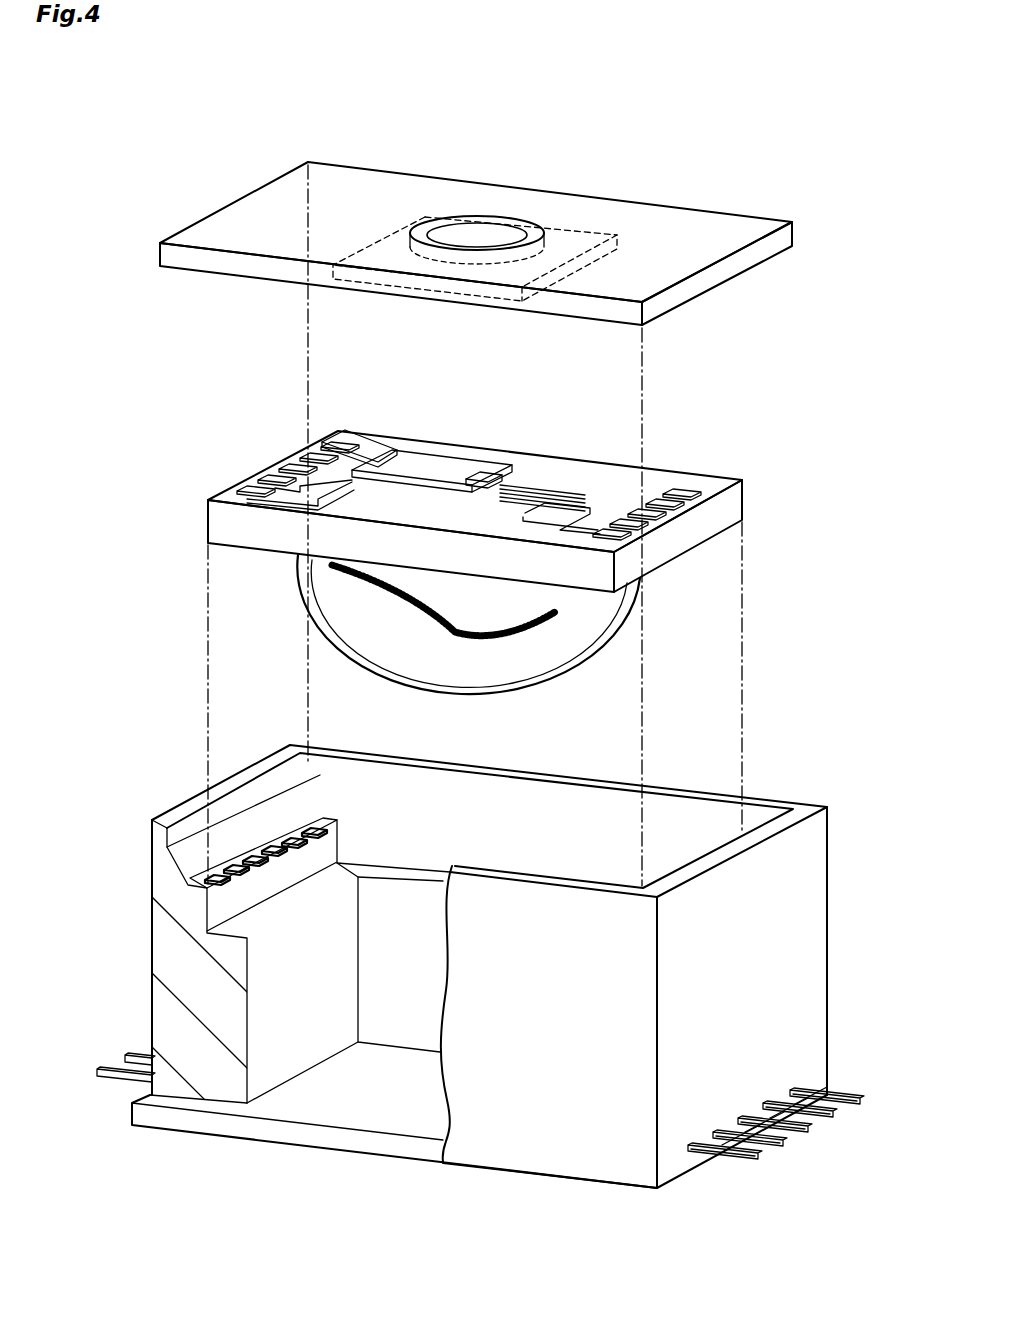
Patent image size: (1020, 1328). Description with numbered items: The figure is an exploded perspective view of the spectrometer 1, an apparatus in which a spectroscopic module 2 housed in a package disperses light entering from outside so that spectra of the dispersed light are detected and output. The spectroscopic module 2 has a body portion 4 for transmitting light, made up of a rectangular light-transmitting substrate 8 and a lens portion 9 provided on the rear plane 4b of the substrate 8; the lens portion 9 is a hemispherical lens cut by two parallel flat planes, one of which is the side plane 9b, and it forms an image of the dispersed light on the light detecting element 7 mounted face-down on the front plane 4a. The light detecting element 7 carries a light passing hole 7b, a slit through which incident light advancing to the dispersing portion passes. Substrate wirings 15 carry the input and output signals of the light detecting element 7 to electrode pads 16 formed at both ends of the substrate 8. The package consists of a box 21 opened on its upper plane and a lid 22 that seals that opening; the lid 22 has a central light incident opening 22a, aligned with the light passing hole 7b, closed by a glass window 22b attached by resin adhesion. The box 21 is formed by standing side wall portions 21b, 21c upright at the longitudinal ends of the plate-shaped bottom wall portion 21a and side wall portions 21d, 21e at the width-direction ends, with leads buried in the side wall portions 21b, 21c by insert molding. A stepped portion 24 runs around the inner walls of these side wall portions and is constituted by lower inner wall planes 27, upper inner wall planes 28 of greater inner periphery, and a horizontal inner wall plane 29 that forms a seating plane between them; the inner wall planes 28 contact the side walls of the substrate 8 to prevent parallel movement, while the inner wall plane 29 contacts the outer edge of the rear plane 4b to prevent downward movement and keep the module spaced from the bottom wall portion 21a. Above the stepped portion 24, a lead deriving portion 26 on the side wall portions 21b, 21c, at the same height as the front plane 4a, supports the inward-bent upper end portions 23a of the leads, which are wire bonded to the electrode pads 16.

The spectrometer 1 is at (98, 158).
The spectroscopic module 2 is at (196, 474).
The body portion 4 is at (803, 565).
The front plane 4a is at (540, 470).
The rear plane 4b is at (245, 548).
The light detecting element 7 is at (432, 468).
The light passing hole 7b is at (487, 480).
The substrate 8 is at (469, 492).
The lens portion 9 is at (543, 642).
The side plane 9b is at (383, 628).
The substrate wiring 15 is at (372, 446).
The electrode pad 16 is at (333, 447).
The box 21 is at (493, 963).
The bottom wall portion 21a is at (243, 1127).
The side wall portion 21b is at (190, 1058).
The side wall portion 21c is at (795, 958).
The side wall portion 21d is at (488, 1065).
The side wall portion 21e is at (510, 765).
The lid 22 is at (683, 205).
The light incident opening 22a is at (430, 216).
The glass window 22b is at (580, 222).
The upper end portion 23a is at (217, 883).
The stepped portion 24 is at (328, 1044).
The lead deriving portion 26 is at (205, 883).
The inner wall plane 27 is at (405, 970).
The inner wall plane 28 is at (363, 842).
The inner wall plane 29 is at (266, 913).